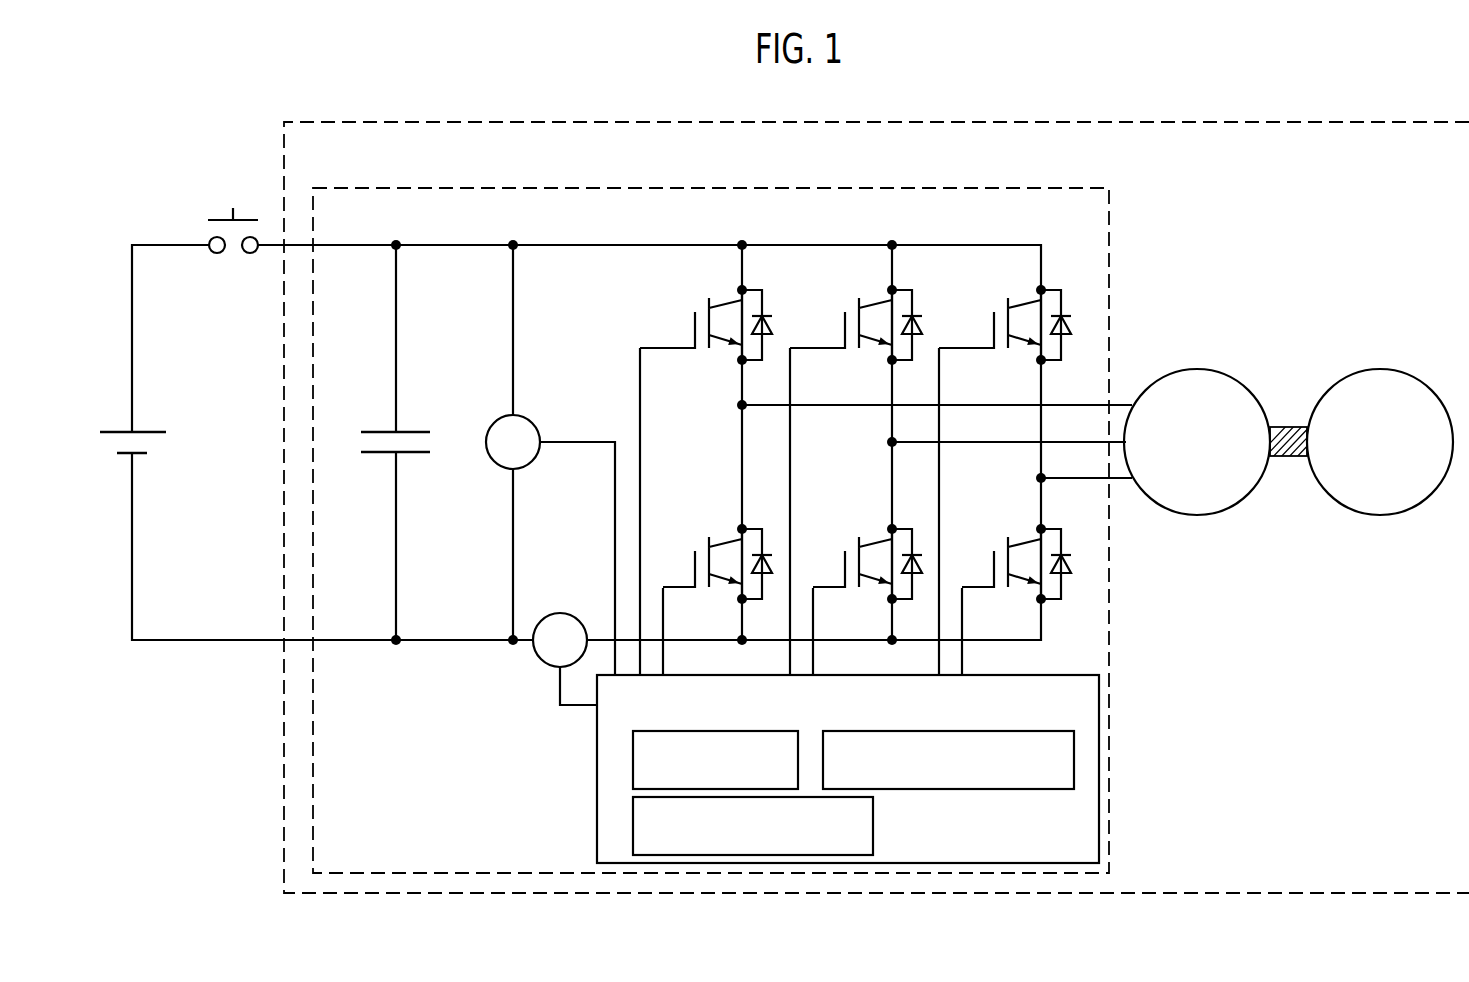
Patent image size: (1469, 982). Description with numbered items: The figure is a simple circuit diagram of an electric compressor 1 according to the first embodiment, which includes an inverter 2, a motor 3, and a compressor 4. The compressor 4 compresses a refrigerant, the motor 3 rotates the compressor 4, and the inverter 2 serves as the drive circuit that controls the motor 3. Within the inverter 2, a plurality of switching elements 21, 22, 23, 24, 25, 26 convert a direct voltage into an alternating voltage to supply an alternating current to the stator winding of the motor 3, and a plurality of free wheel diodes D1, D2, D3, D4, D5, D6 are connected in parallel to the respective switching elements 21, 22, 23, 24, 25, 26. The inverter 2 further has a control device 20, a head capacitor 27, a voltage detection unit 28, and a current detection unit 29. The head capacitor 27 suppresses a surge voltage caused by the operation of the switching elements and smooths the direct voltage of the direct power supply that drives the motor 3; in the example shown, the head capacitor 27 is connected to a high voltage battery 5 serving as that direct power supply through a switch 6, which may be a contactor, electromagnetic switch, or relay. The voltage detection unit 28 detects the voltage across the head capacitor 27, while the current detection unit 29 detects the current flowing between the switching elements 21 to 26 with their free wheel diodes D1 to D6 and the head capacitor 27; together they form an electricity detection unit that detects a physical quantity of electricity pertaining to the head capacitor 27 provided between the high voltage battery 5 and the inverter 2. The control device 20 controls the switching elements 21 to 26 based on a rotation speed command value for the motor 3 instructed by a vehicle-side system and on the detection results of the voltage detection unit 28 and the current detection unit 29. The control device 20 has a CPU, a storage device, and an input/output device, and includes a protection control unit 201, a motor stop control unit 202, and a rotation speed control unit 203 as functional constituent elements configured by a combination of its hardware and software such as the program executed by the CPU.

The electric compressor 1 is at (1280, 122).
The inverter 2 is at (1020, 187).
The motor 3 is at (1200, 368).
The compressor 4 is at (1383, 368).
The high voltage battery 5 is at (145, 424).
The switch 6 is at (204, 222).
The control device 20 is at (1020, 672).
The switching element 21 is at (700, 308).
The switching element 22 is at (849, 308).
The switching element 23 is at (999, 308).
The switching element 24 is at (700, 548).
The switching element 25 is at (850, 548).
The switching element 26 is at (999, 548).
The free wheel diode D1 is at (772, 326).
The free wheel diode D2 is at (943, 320).
The free wheel diode D3 is at (1090, 320).
The free wheel diode D4 is at (773, 560).
The free wheel diode D5 is at (924, 560).
The free wheel diode D6 is at (1068, 560).
The head capacitor 27 is at (403, 428).
The voltage detection unit 28 is at (535, 418).
The current detection unit 29 is at (558, 612).
The protection control unit 201 is at (632, 766).
The motor stop control unit 202 is at (1075, 748).
The rotation speed control unit 203 is at (632, 833).